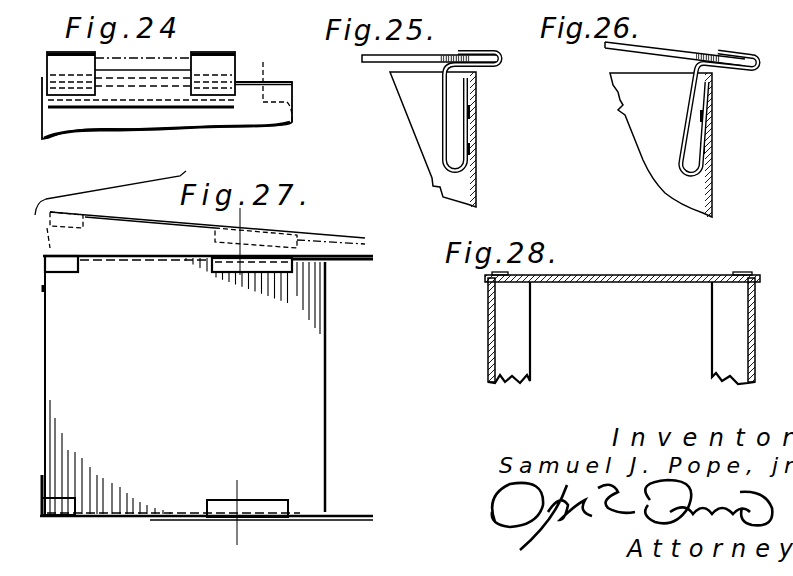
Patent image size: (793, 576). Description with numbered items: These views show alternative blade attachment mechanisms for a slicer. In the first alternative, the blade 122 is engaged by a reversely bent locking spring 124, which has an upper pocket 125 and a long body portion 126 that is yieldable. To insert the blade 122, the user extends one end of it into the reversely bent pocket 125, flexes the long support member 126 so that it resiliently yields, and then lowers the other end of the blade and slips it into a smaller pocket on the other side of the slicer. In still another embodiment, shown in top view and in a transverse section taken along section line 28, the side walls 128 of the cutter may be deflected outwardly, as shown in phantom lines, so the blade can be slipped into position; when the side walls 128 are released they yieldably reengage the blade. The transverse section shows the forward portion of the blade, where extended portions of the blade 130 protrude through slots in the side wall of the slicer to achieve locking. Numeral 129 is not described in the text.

In FIG. 24, the blade 122 is at (277, 71).
In FIG. 25, the blade 122 is at (385, 61).
In FIG. 25, the reversely bent locking spring 124 is at (452, 129).
In FIG. 24, the upper pocket 125 is at (217, 68).
In FIG. 25, the upper pocket 125 is at (497, 44).
In FIG. 26, the upper pocket 125 is at (735, 58).
In FIG. 25, the long body portion 126 is at (446, 101).
In FIG. 26, the long body portion 126 is at (688, 135).
In FIG. 27, the side walls 128 is at (275, 259).
In FIG. 28, the side wall 129 is at (485, 282).
In FIG. 28, the blade 130 is at (631, 280).
In FIG. 27, the section line 28 is at (225, 538).